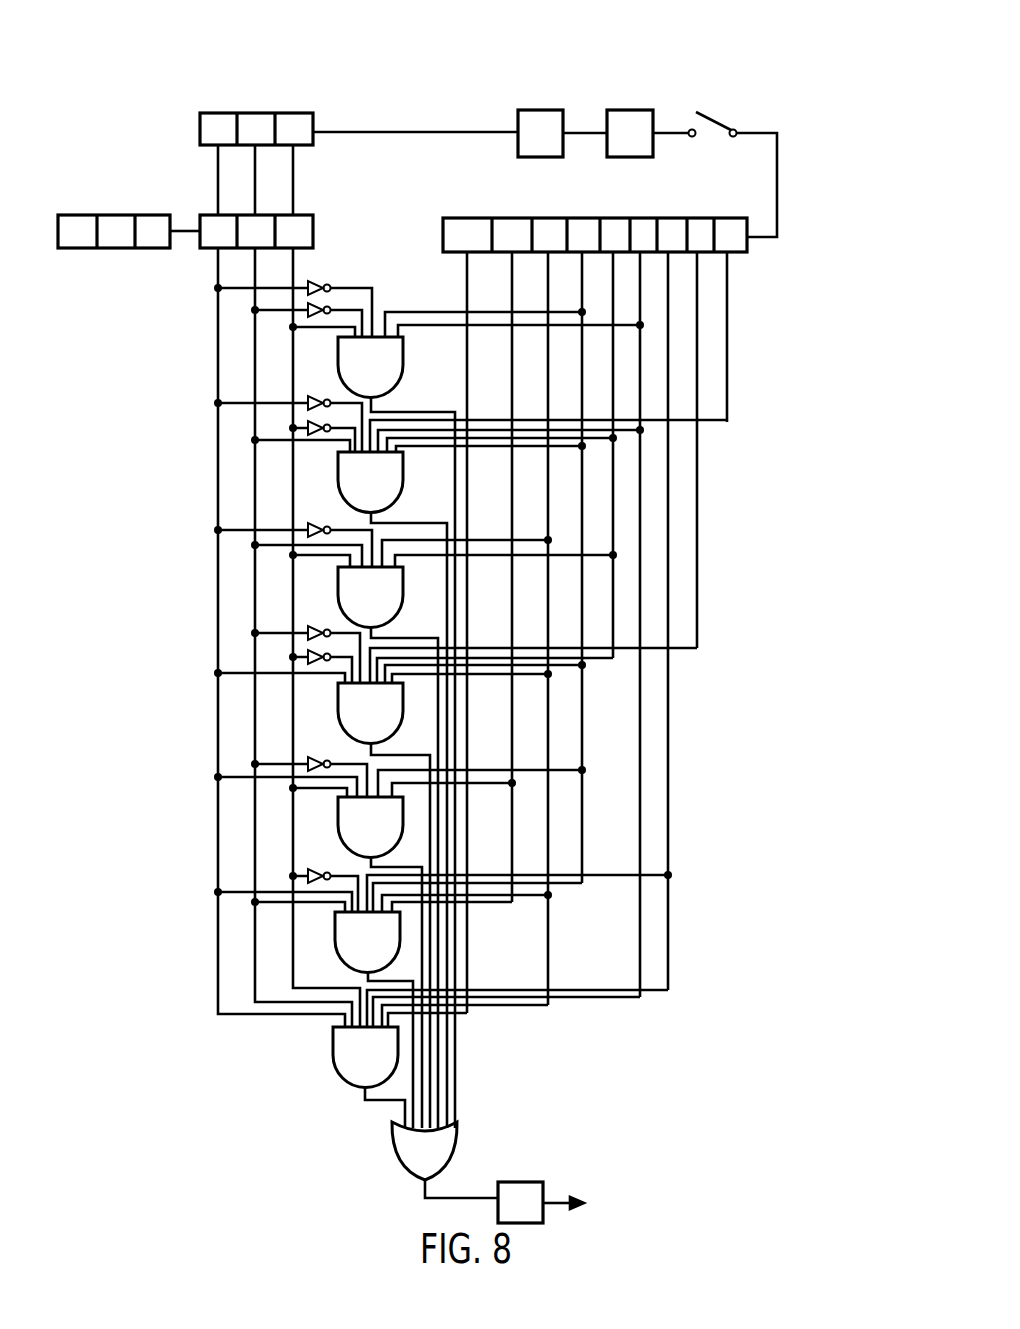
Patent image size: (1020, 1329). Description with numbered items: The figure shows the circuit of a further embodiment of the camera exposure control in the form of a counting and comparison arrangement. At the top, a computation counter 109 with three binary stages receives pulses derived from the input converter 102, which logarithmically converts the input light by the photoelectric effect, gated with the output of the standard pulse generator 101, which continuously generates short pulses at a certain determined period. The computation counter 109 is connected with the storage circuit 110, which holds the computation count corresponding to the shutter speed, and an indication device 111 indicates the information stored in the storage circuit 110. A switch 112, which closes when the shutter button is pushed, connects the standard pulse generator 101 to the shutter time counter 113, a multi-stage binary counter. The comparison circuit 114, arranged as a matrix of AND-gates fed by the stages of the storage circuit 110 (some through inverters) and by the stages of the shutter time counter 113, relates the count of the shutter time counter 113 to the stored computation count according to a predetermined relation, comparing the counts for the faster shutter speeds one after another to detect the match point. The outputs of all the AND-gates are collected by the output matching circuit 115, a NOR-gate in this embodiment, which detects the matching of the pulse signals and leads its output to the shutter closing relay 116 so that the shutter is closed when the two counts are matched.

The computation counter 109 is at (202, 113).
The storage circuit 110 is at (313, 215).
The indication device 111 is at (66, 248).
The input converter 102 is at (536, 110).
The standard pulse generator 101 is at (650, 110).
The switch 112 is at (712, 127).
The shutter time counter 113 is at (747, 252).
The comparison circuit 114 is at (218, 266).
The output matching circuit 115 is at (445, 1160).
The shutter closing relay 116 is at (548, 1200).